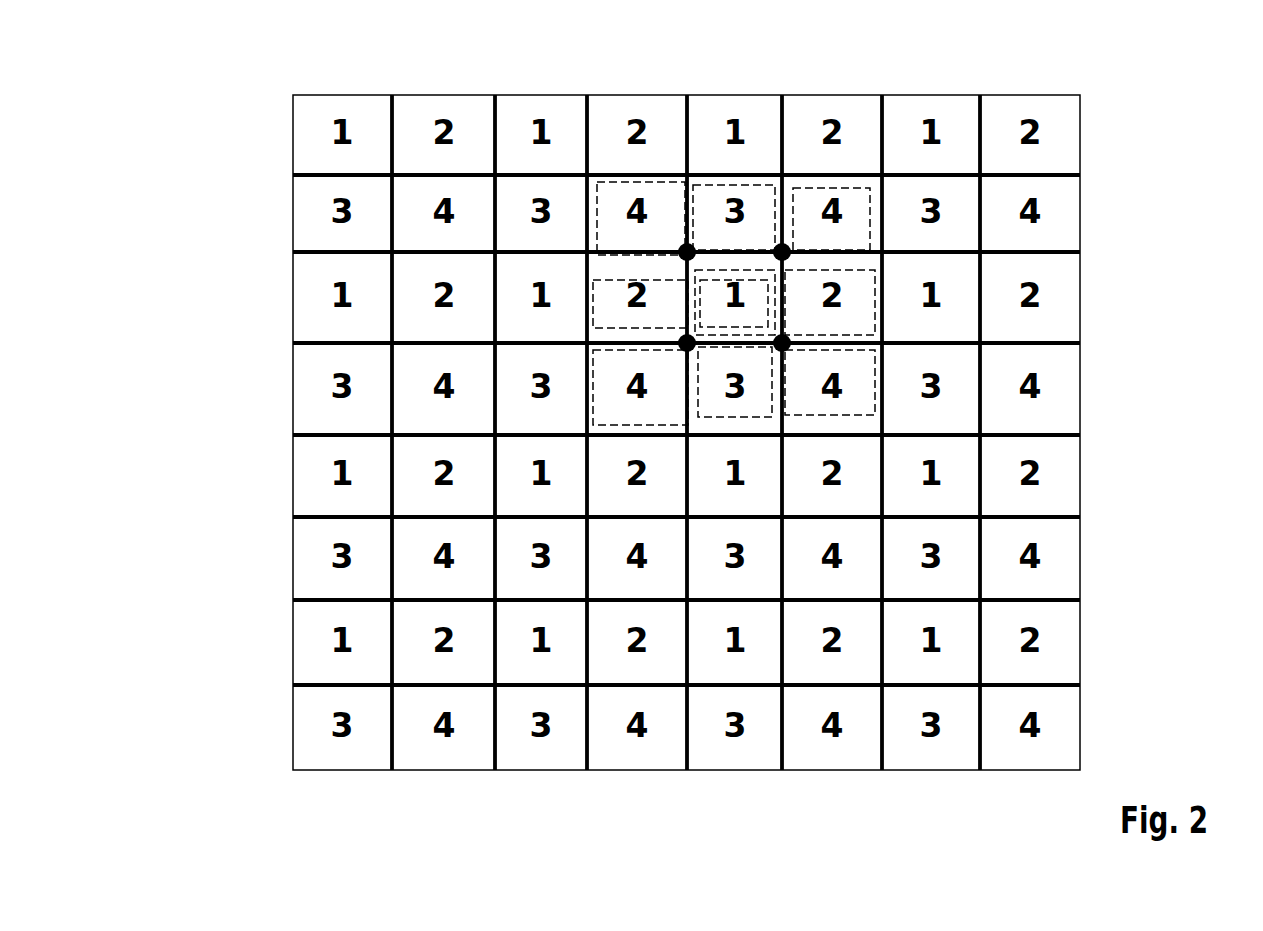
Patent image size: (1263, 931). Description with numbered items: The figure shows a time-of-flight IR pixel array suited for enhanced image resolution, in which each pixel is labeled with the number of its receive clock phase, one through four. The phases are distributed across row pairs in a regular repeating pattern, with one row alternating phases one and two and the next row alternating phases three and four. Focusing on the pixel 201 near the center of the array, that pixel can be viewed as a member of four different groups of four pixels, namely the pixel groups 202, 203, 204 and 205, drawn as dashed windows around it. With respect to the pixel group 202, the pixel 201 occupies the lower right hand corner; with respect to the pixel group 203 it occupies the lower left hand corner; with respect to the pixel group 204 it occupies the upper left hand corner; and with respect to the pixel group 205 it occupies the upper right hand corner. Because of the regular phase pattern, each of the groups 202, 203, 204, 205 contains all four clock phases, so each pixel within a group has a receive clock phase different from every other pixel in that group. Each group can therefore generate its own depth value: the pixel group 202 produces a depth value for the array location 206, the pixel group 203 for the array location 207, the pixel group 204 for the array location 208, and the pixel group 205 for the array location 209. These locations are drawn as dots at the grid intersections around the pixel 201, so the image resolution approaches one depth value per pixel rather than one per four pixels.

The pixel 201 is at (755, 305).
The pixel group 202 is at (608, 182).
The pixel group 203 is at (829, 188).
The pixel group 204 is at (853, 415).
The pixel group 205 is at (598, 425).
The array location 206 is at (685, 250).
The array location 207 is at (784, 250).
The array location 208 is at (784, 344).
The array location 209 is at (685, 344).